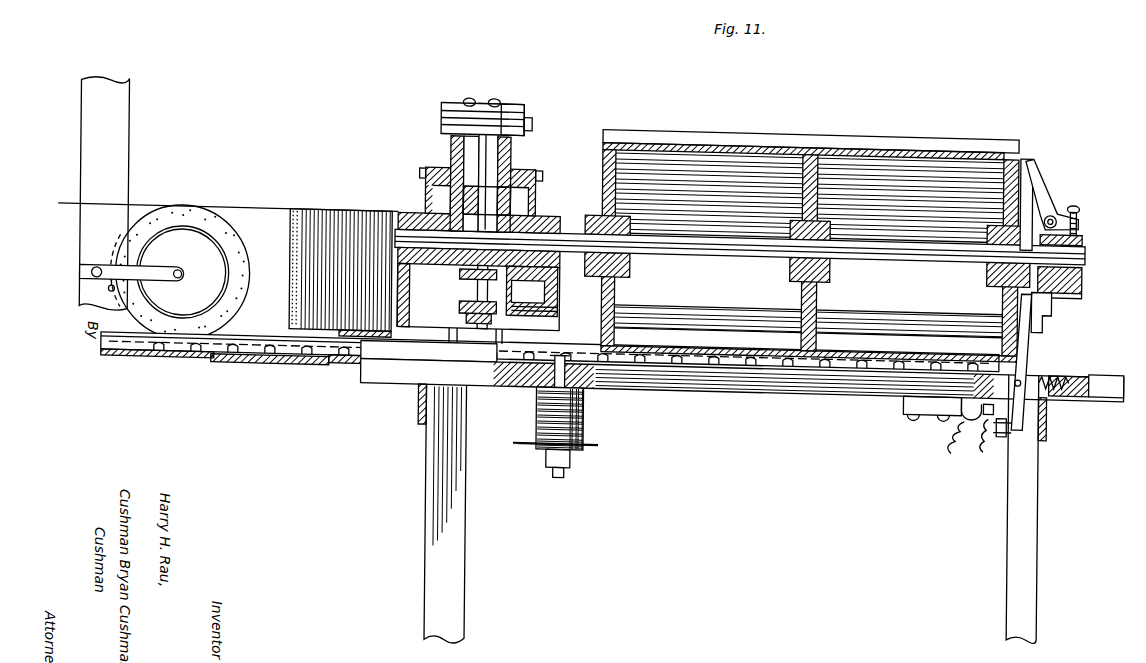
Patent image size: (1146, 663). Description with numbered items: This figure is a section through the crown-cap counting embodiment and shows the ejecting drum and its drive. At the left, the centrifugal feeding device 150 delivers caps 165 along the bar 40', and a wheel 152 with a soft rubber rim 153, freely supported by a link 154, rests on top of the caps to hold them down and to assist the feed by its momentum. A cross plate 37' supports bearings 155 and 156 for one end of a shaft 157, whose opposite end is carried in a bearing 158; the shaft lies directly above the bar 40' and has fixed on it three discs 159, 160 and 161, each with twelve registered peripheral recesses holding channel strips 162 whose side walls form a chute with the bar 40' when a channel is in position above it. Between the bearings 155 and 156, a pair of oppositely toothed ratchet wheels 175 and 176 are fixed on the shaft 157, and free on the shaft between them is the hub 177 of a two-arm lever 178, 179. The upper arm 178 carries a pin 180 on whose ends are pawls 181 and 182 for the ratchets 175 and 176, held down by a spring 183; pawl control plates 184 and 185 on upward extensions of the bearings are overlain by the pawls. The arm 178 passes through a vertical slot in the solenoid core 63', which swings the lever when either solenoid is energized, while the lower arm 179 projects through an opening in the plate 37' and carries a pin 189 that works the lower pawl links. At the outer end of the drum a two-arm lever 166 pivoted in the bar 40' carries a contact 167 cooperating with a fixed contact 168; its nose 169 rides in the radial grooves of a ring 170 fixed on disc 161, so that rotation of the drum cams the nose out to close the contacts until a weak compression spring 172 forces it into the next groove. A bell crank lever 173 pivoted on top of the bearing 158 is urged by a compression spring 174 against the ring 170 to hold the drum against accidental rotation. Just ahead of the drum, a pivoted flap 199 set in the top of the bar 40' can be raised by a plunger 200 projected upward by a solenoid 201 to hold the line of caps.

The centrifugal feeding device 150 is at (302, 216).
The wheel 152 is at (162, 243).
The soft rubber rim 153 is at (217, 224).
The link 154 is at (155, 288).
The bearing 155 is at (406, 214).
The bearing 156 is at (547, 222).
The shaft 157 is at (1087, 237).
The bearing 158 is at (1083, 262).
The disc 159 is at (603, 176).
The disc 160 is at (812, 150).
The disc 161 is at (1006, 140).
The channel strips 162 is at (930, 138).
The core 63' is at (433, 182).
The caps 165 is at (305, 363).
The two-arm lever 166 is at (1030, 345).
The contact 167 is at (985, 440).
The fixed contact 168 is at (955, 438).
The nose 169 is at (1045, 300).
The ring 170 is at (1027, 160).
The compression spring 172 is at (1060, 364).
The bell crank lever 173 is at (1045, 175).
The compression spring 174 is at (1080, 212).
The ratchet wheel 175 is at (432, 190).
The ratchet wheel 176 is at (510, 160).
The hub 177 is at (520, 208).
The lever arm 178 is at (478, 130).
The lever arm 179 is at (472, 300).
The pin 180 is at (522, 112).
The pawl 181 is at (445, 112).
The pawl 182 is at (531, 120).
The holddown spring 183 is at (496, 101).
The pawl control plate 184 is at (447, 142).
The pawl control plate 185 is at (518, 140).
The pin 189 is at (462, 273).
The pivoted flap 199 is at (560, 354).
The plunger 200 is at (540, 390).
The solenoid 201 is at (600, 440).
The cross plate 37' is at (548, 291).
The bar 40' is at (741, 500).